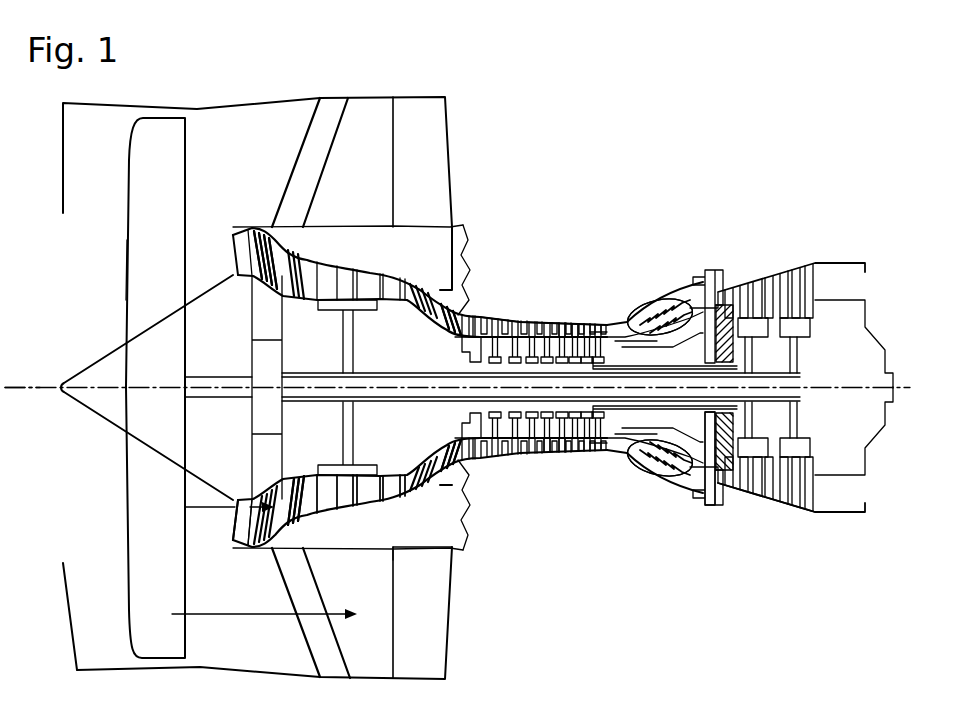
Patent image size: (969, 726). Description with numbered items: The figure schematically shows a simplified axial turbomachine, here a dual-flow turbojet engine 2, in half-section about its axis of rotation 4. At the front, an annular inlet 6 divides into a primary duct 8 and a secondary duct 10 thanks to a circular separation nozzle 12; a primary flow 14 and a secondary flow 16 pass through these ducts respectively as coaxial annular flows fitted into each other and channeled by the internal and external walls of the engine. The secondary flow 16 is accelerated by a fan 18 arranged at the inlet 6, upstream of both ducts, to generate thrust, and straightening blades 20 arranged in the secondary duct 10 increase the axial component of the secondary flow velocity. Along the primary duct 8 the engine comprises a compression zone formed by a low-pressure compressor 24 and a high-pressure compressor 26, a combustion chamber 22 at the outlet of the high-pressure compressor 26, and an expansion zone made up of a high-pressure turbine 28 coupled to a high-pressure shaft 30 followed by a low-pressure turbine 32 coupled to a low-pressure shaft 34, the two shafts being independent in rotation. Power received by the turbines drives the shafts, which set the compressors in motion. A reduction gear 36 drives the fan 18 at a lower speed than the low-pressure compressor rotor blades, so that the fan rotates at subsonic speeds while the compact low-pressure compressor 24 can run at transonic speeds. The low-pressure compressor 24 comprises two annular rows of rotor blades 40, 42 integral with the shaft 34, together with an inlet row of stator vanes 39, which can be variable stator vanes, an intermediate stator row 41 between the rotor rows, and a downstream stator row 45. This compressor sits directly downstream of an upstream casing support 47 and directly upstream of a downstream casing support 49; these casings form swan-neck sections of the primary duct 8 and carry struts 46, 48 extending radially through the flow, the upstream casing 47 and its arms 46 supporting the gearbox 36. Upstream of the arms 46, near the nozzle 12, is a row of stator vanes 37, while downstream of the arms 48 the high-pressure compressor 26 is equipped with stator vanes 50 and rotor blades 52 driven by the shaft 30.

The dual-flow turbojet engine 2 is at (500, 570).
The axis of rotation 4 is at (50, 392).
The annular inlet 6 is at (101, 201).
The primary duct 8 is at (288, 490).
The secondary duct 10 is at (245, 139).
The circular separation nozzle 12 is at (232, 547).
The primary flow 14 is at (227, 507).
The secondary flow 16 is at (258, 618).
The fan 18 is at (123, 258).
The straightening blades 20 is at (303, 166).
The combustion chamber 22 is at (645, 320).
The low-pressure compressor 24 is at (354, 247).
The high-pressure compressor 26 is at (545, 297).
The high-pressure turbine 28 is at (710, 522).
The high-pressure shaft 30 is at (636, 412).
The low-pressure turbine 32 is at (790, 522).
The low-pressure shaft 34 is at (800, 398).
The reduction gear 36 is at (255, 417).
The stator vanes 37 is at (250, 528).
The inlet row of stator vanes 39 is at (307, 493).
The first row of rotor blades 40 is at (320, 500).
The intermediate stator row 41 is at (346, 500).
The second row of rotor blades 42 is at (370, 493).
The downstream stator row 45 is at (400, 490).
The struts of upstream casing 46 is at (275, 257).
The upstream casing support 47 is at (276, 235).
The struts of downstream casing 48 is at (425, 330).
The downstream casing support 49 is at (418, 538).
The stator vanes of high-pressure compressor 50 is at (578, 322).
The rotor blades of high-pressure compressor 52 is at (570, 452).